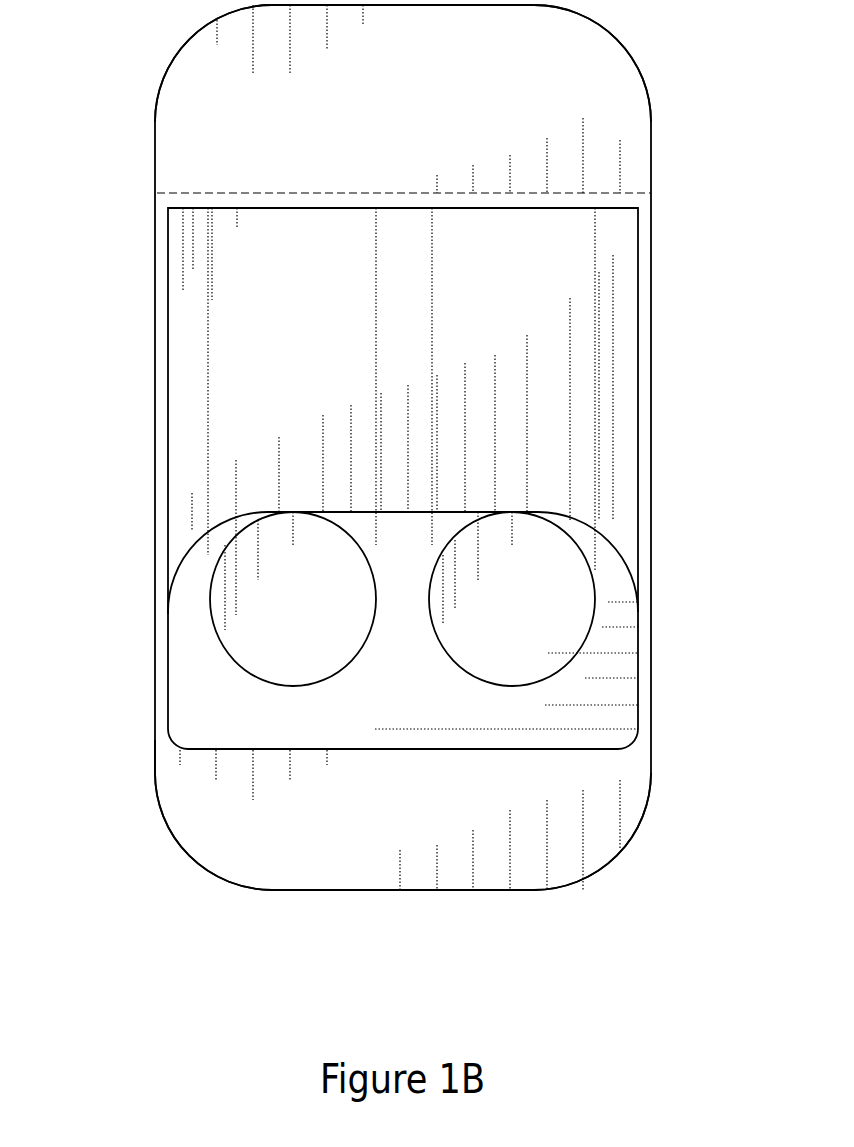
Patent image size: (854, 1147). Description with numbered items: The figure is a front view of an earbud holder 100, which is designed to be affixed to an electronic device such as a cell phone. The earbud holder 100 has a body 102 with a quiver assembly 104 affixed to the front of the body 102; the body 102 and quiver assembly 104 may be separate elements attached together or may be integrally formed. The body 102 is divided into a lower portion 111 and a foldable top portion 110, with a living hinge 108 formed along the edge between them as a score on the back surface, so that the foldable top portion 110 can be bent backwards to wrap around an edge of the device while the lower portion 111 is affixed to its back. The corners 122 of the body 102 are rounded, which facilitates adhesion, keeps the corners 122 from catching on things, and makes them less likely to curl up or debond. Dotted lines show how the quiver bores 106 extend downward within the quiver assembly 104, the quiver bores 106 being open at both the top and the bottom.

The earbud holder 100 is at (423, 92).
The body 102 is at (635, 775).
The quiver assembly 104 is at (625, 307).
The quiver bores 106 is at (245, 420).
The living hinge 108 is at (640, 203).
The foldable top portion 110 is at (155, 152).
The lower portion 111 is at (155, 765).
The corners 122 is at (165, 64).